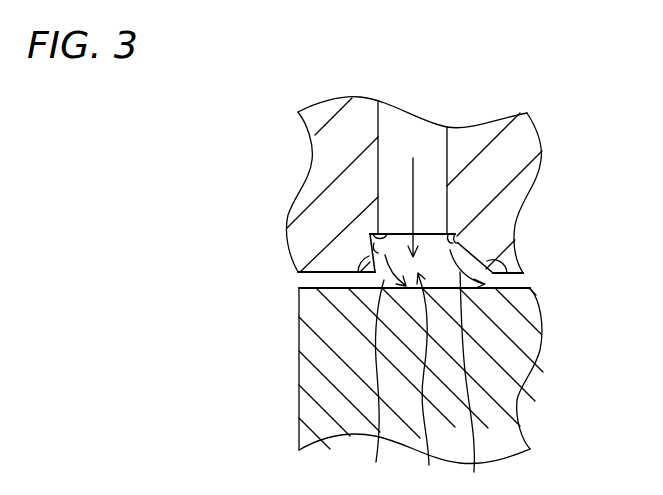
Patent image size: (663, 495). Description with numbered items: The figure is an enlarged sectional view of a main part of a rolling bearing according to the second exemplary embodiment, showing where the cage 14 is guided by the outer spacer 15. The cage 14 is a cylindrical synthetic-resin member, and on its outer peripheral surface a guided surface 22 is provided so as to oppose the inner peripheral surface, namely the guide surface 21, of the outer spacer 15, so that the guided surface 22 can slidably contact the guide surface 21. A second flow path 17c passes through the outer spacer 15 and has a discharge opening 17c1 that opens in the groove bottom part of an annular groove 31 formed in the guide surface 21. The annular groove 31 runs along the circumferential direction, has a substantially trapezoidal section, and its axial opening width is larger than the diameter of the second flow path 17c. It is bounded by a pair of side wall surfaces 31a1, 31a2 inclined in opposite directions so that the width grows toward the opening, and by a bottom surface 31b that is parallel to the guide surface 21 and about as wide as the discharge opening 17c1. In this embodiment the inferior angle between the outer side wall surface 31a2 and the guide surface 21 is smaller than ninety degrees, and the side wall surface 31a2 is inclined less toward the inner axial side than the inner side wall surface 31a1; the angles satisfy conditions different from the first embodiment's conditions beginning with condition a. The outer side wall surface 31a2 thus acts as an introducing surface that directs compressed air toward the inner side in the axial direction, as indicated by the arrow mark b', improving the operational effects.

The cage 14 is at (323, 403).
The outer spacer 15 is at (338, 129).
The second flow path 17c is at (378, 138).
The discharge opening 17c1 is at (368, 233).
The guide surface 21 is at (315, 275).
The guided surface 22 is at (316, 286).
The annular groove 31 is at (429, 465).
The side wall surface of inner side in axial direction 31a1 is at (460, 248).
The side wall surface of outer side in axial direction 31a2 is at (368, 236).
The bottom surface 31b is at (457, 240).
The conditions a is at (468, 381).
The arrow mark b' is at (374, 378).